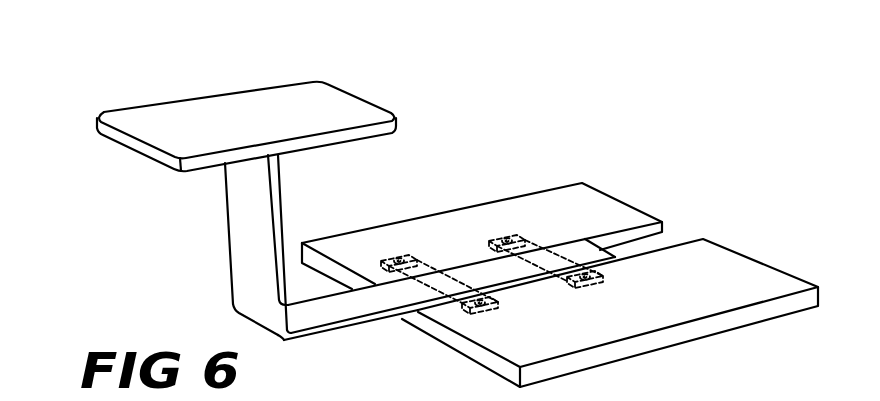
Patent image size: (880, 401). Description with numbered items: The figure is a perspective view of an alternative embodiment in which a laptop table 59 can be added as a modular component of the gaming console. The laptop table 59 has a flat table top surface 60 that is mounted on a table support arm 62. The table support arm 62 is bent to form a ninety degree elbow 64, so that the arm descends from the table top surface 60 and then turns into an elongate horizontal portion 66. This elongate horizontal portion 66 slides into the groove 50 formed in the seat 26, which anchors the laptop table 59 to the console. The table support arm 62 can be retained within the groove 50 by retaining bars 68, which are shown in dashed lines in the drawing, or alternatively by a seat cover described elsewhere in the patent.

The laptop table 59 is at (168, 82).
The flat table top surface 60 is at (298, 97).
The table support arm 62 is at (245, 229).
The 90 degree elbow 64 is at (284, 343).
The elongate horizontal portion 66 is at (347, 309).
The retaining bars 68 is at (500, 240).
The groove 50 is at (667, 238).
The seat 26 is at (737, 263).